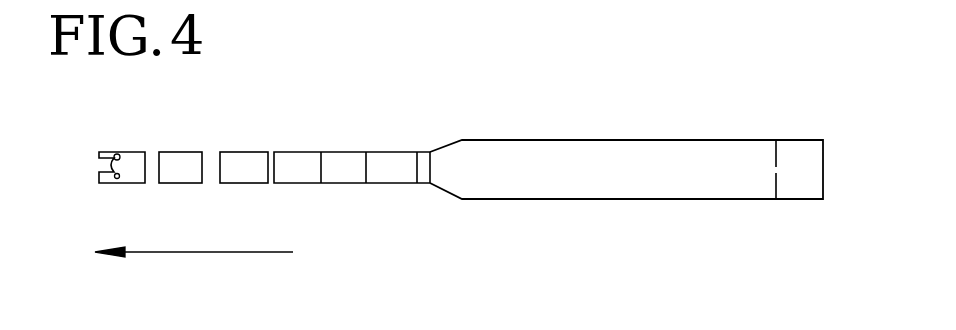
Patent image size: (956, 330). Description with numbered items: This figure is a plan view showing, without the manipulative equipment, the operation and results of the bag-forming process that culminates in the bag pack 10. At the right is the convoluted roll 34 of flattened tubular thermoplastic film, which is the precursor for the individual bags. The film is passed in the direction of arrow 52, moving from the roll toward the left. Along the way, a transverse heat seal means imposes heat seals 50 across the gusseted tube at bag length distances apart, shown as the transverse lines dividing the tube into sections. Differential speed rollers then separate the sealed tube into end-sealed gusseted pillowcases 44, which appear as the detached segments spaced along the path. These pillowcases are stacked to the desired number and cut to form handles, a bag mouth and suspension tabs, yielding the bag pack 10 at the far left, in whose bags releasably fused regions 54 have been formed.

The bag pack 10 is at (118, 154).
The releasably fused regions 54 is at (114, 156).
The end-sealed gusseted pillowcases 44 is at (258, 152).
The heat seals 50 is at (417, 170).
The convoluted roll 34 is at (789, 141).
The arrow 52 is at (194, 275).